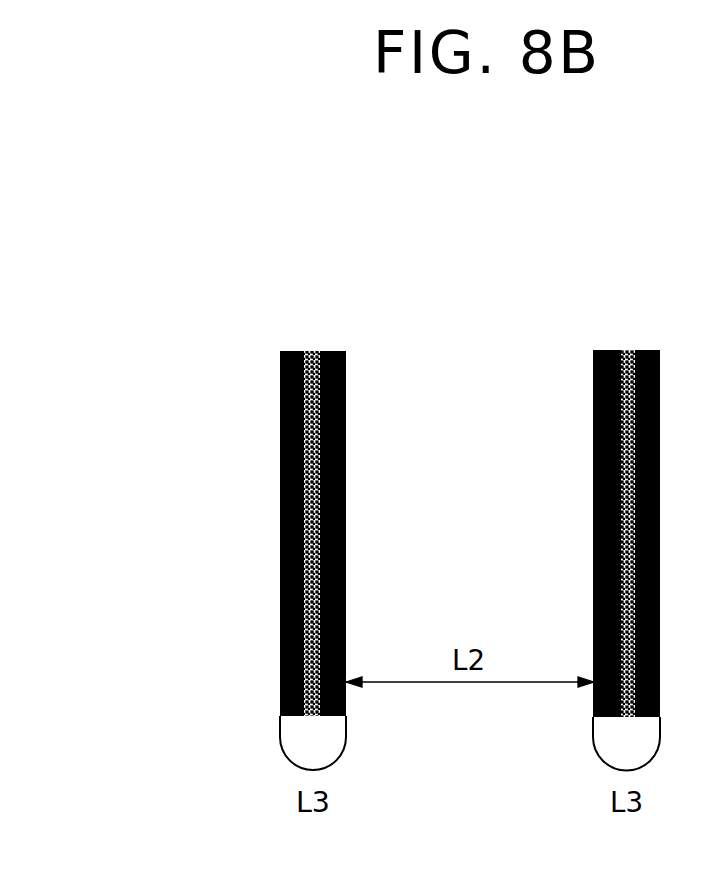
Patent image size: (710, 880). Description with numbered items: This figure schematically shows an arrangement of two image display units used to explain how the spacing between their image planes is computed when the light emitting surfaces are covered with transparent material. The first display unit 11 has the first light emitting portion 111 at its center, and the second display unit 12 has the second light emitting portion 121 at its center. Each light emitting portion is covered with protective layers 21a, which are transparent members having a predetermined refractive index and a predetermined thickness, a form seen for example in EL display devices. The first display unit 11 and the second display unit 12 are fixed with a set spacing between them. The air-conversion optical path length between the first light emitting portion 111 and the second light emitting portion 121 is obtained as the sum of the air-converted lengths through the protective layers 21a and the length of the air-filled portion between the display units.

The first display unit 11 is at (325, 460).
The second display unit 12 is at (640, 461).
The first light emitting portion 111 is at (313, 351).
The second light emitting portion 121 is at (628, 350).
The protective layers 21a is at (285, 351).